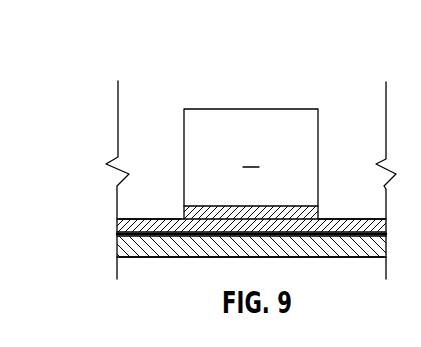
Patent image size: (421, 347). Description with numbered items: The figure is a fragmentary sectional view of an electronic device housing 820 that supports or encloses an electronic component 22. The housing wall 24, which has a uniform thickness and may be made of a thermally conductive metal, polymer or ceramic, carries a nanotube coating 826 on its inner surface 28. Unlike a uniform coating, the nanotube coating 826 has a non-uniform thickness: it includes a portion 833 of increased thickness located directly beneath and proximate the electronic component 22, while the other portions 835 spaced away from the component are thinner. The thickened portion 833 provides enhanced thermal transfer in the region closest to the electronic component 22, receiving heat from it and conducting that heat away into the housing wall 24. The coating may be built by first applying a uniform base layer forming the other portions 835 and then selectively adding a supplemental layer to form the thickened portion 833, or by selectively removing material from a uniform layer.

The electronic component 22 is at (245, 110).
The housing wall 24 is at (335, 259).
The inner surface 28 is at (163, 259).
The electronic device housing 820 is at (362, 216).
The nanotube coating 826 is at (137, 220).
The portion of increased thickness 833 is at (183, 212).
The other portions 835 is at (152, 218).